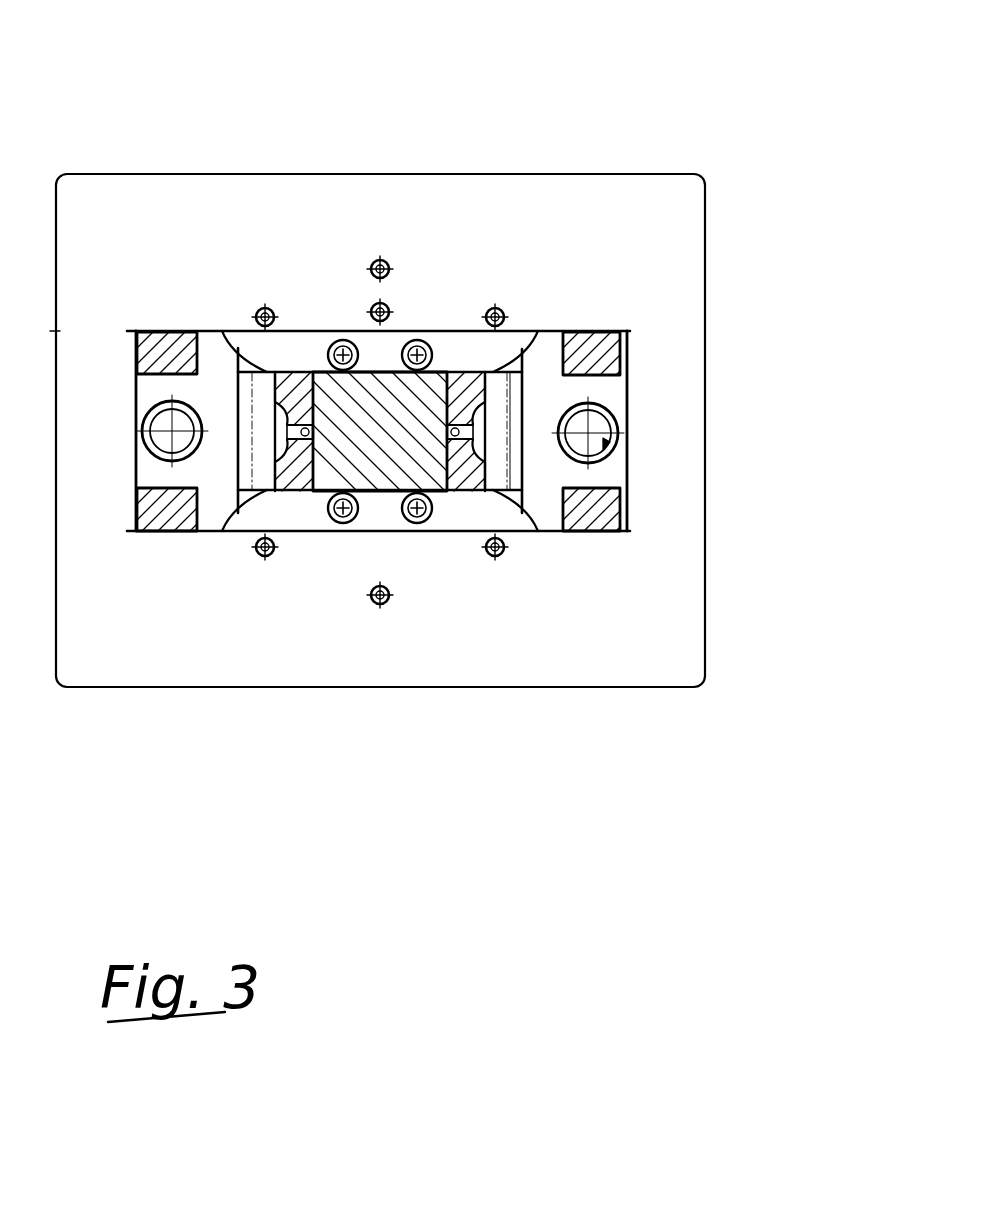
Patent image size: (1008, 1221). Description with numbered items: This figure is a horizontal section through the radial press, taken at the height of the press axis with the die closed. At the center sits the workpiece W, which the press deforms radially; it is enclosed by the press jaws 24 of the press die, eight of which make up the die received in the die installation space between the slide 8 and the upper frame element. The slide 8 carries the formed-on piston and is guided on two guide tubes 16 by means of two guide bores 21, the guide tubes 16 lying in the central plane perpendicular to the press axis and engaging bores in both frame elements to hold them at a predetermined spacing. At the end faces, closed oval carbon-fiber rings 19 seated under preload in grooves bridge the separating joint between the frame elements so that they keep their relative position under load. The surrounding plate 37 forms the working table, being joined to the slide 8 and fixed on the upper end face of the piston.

The workpiece W is at (418, 417).
The slide 8 is at (218, 488).
The guide tube 16 is at (610, 417).
The carbon-fiber ring 19 is at (597, 350).
The guide bore 21 is at (625, 440).
The press jaw 24 is at (466, 480).
The plate 37 is at (657, 653).